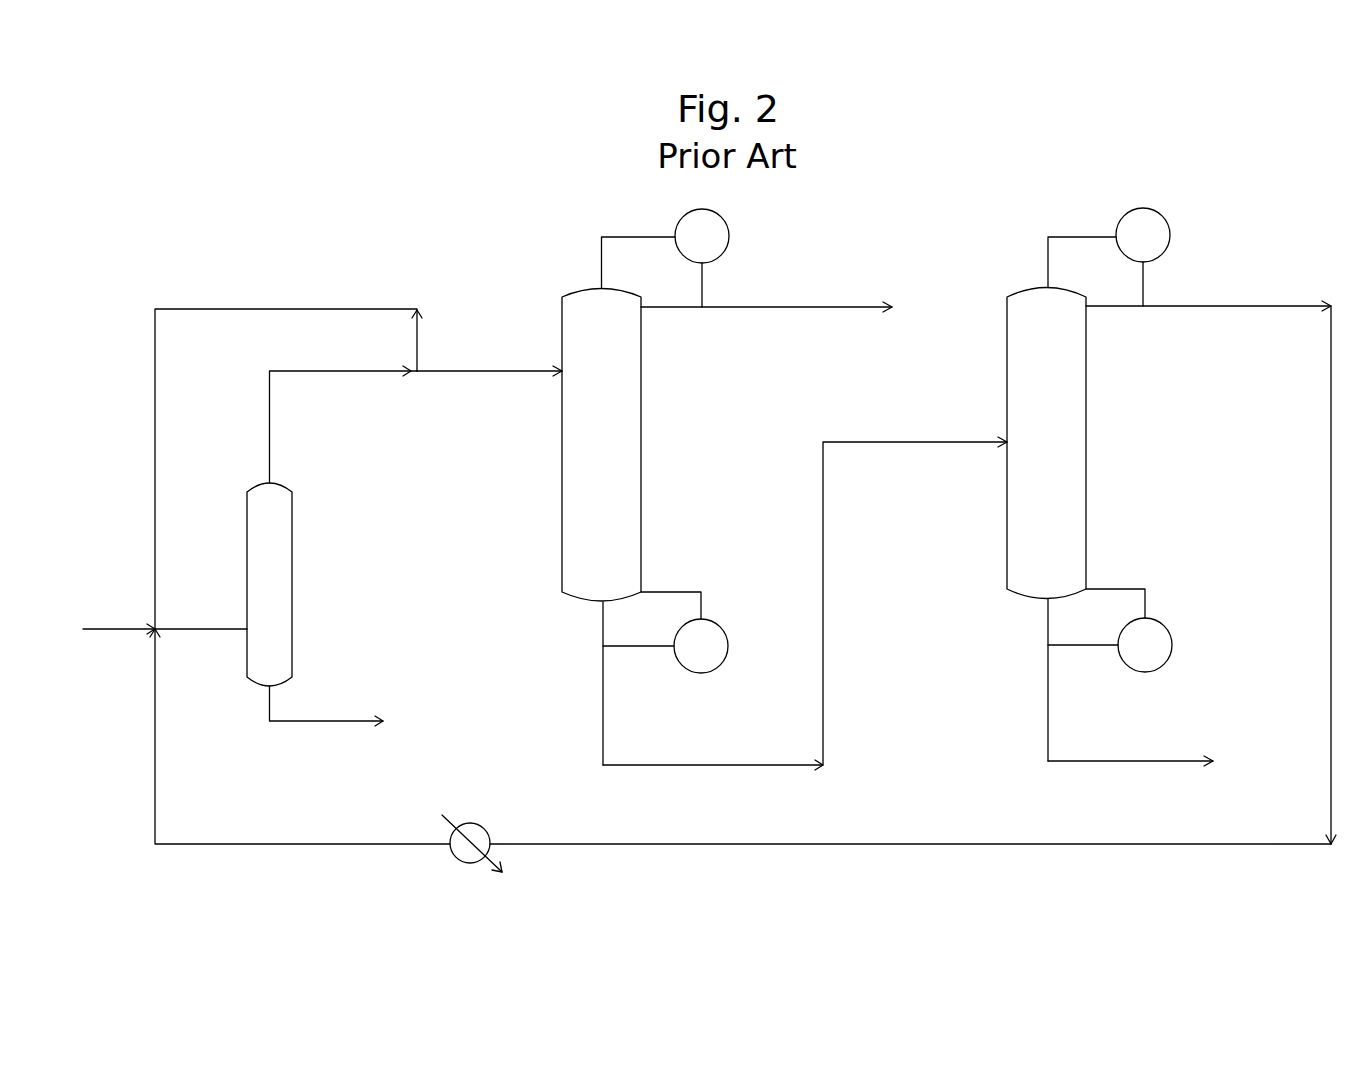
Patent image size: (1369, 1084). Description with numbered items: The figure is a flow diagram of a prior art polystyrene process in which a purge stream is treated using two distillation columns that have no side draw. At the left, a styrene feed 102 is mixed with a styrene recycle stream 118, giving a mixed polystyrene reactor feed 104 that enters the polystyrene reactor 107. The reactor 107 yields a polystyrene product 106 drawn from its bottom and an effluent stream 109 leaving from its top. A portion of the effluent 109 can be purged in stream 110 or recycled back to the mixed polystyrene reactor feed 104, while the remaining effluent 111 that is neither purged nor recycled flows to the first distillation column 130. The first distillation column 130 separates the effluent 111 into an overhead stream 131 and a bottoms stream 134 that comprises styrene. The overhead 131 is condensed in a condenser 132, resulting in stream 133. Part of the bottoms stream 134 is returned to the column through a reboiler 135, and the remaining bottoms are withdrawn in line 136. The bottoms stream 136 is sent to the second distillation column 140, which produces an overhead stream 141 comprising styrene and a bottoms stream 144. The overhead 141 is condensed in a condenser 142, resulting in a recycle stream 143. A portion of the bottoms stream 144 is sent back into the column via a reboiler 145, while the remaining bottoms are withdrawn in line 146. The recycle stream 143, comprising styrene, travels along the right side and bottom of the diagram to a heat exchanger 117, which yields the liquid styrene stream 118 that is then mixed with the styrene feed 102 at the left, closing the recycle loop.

The styrene feed 102 is at (90, 622).
The mixed polystyrene reactor feed 104 is at (206, 622).
The polystyrene product 106 is at (322, 720).
The polystyrene reactor 107 is at (292, 583).
The effluent stream 109 is at (262, 368).
The purge stream 110 is at (360, 303).
The remaining effluent 111 is at (463, 378).
The heat exchanger 117 is at (457, 865).
The styrene recycle stream 118 is at (150, 756).
The first distillation column 130 is at (601, 445).
The overhead stream 131 is at (628, 226).
The condenser 132 is at (740, 222).
The condensed overhead stream 133 is at (793, 298).
The bottoms stream 134 is at (598, 627).
The reboiler 135 is at (733, 642).
The bottoms line 136 is at (818, 497).
The second distillation column 140 is at (1046, 443).
The overhead stream 141 is at (1070, 228).
The condenser 142 is at (1178, 222).
The recycle stream 143 is at (1243, 298).
The bottoms stream 144 is at (1042, 622).
The reboiler 145 is at (1175, 643).
The bottoms line 146 is at (1115, 755).